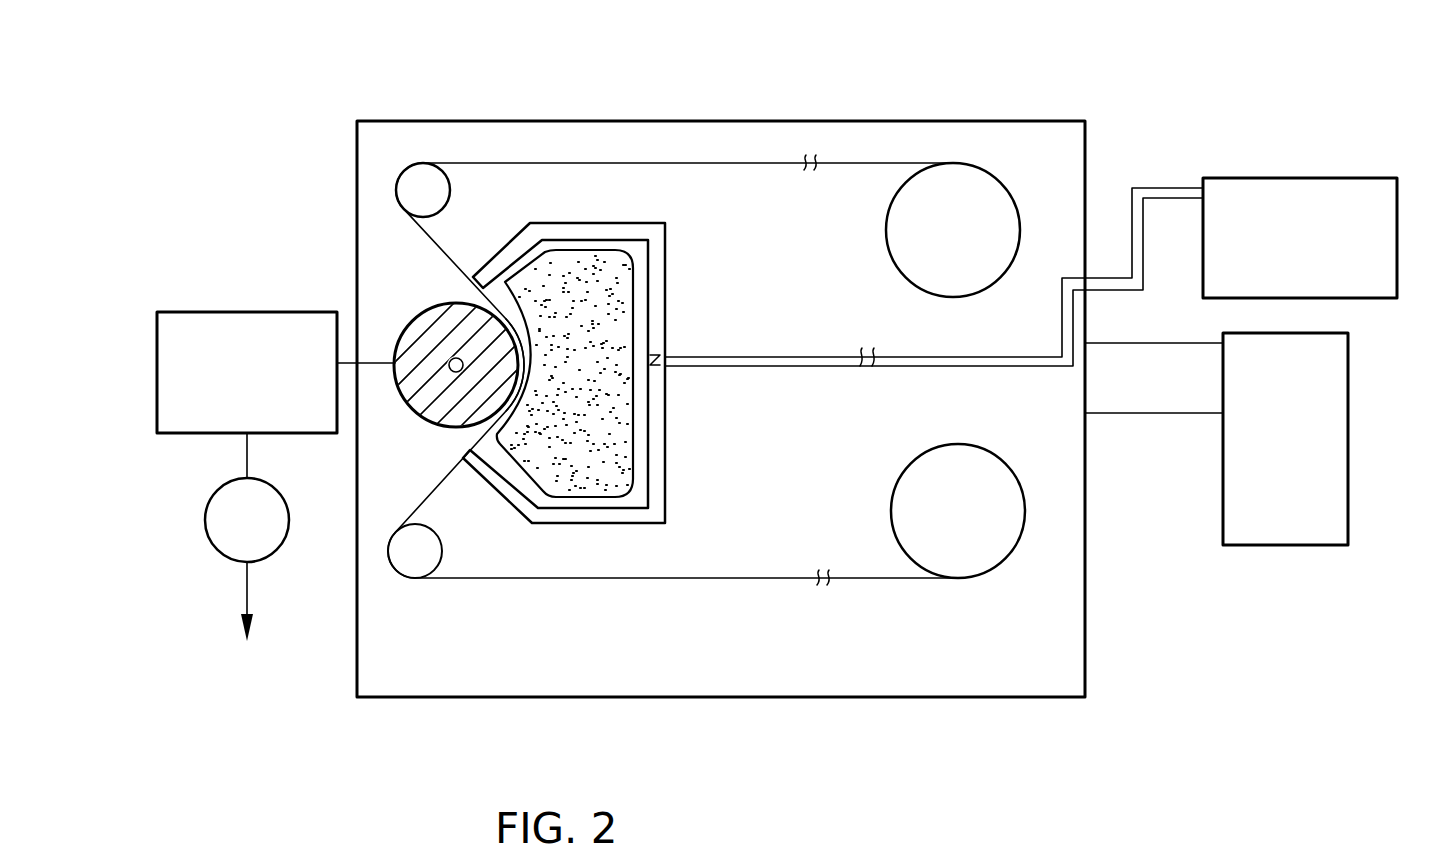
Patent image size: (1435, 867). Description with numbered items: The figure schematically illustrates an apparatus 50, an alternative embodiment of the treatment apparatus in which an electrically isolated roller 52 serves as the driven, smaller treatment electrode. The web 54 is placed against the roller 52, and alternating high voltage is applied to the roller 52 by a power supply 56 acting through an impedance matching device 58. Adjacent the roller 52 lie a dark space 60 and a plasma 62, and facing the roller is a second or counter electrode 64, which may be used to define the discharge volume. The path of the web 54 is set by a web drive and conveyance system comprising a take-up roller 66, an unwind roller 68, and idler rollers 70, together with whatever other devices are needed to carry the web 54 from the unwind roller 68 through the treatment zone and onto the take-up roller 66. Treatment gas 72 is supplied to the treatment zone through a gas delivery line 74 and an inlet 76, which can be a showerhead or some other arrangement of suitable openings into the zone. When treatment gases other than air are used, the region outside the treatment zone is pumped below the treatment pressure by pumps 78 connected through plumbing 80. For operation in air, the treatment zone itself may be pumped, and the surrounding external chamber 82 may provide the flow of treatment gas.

The apparatus 50 is at (886, 722).
The roller 52 is at (407, 330).
The web 54 is at (608, 581).
The power supply 56 is at (212, 497).
The impedance matching device 58 is at (207, 312).
The dark space 60 is at (490, 296).
The plasma 62 is at (547, 280).
The second electrode 64 is at (657, 262).
The take-up roller 66 is at (916, 489).
The unwind roller 68 is at (980, 205).
The idler rollers 70 is at (422, 175).
The treatment gas 72 is at (1240, 178).
The gas delivery line 74 is at (778, 368).
The inlet 76 is at (656, 357).
The pumps 78 is at (1350, 372).
The plumbing 80 is at (1157, 403).
The external chamber 82 is at (1086, 665).